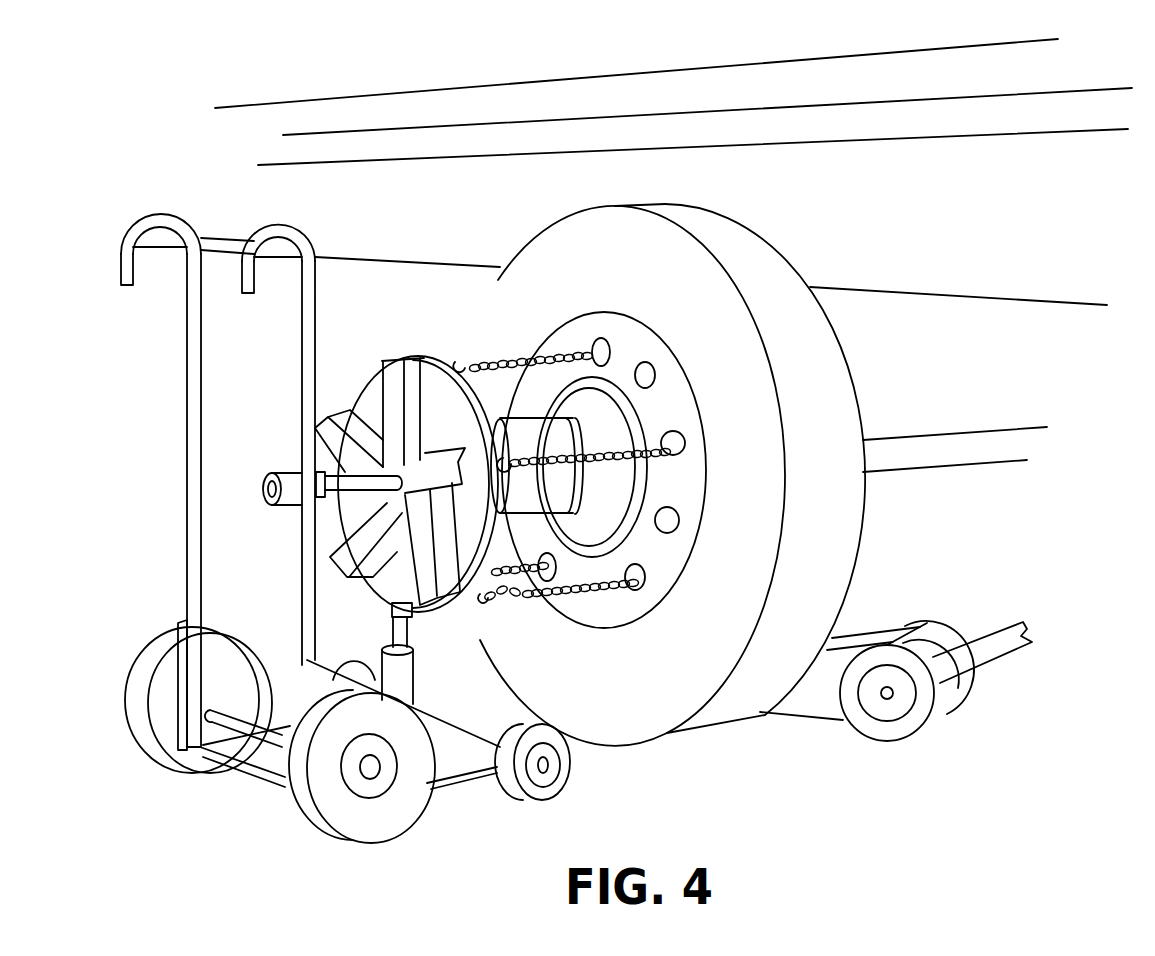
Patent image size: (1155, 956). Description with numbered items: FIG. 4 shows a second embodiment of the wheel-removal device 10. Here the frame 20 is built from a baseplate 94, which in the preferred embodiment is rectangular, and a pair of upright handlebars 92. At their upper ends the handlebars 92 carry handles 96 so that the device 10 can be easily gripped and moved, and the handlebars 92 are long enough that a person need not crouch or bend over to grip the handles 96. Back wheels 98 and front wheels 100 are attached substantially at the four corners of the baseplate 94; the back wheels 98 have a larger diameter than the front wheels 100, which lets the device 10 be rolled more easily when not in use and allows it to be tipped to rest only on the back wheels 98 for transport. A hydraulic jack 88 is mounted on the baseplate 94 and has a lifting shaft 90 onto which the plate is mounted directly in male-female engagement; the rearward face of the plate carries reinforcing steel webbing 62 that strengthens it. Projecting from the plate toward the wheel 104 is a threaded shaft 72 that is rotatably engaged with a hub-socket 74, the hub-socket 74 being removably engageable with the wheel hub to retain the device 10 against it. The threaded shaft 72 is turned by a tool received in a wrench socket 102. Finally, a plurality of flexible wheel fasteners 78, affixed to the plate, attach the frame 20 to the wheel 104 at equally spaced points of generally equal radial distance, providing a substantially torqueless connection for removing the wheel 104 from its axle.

The device 10 is at (96, 456).
The frame 20 is at (245, 797).
The reinforcing steel webbing 62 is at (453, 600).
The threaded shaft 72 is at (330, 508).
The hub-socket 74 is at (543, 521).
The flexible wheel fasteners 78 is at (522, 345).
The hydraulic jack 88 is at (413, 690).
The lifting shaft 90 is at (408, 630).
The handlebars 92 is at (184, 348).
The baseplate 94 is at (467, 780).
The handles 96 is at (147, 216).
The back wheels 98 is at (143, 753).
The front wheels 100 is at (350, 665).
The wrench socket 102 is at (271, 472).
The wheel 104 is at (845, 350).